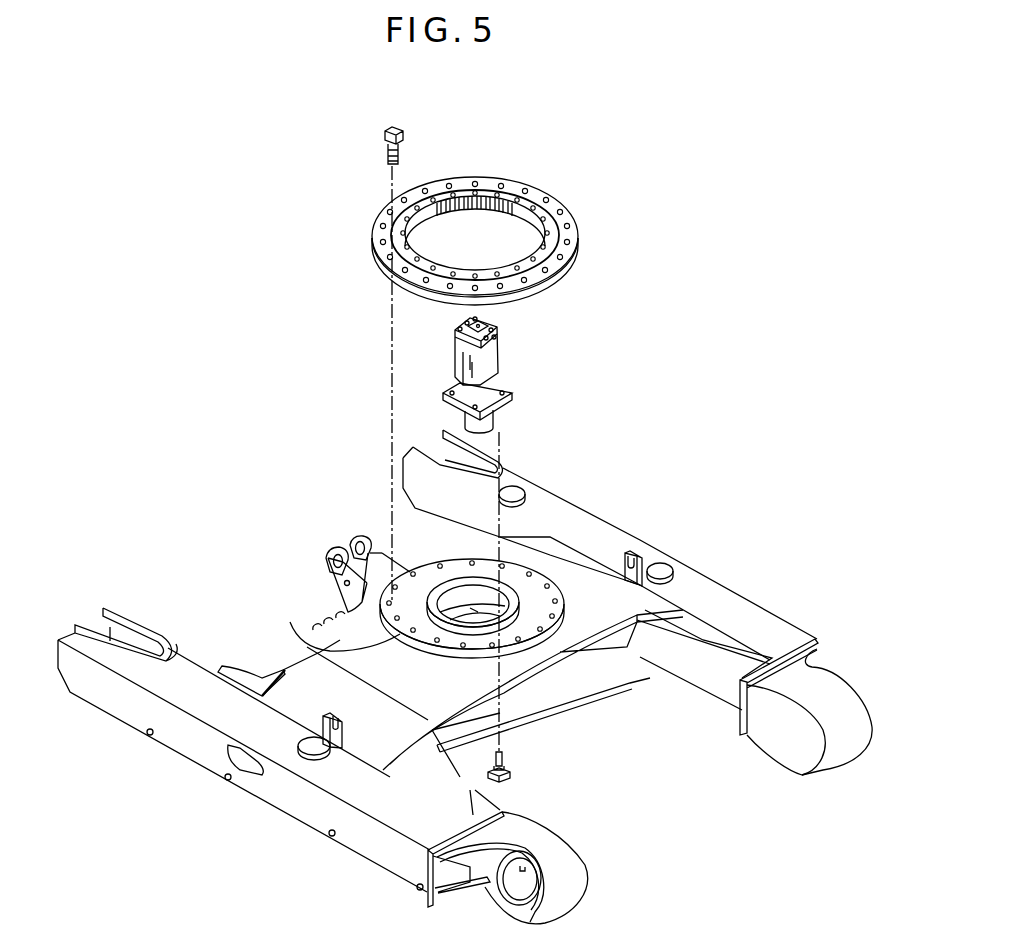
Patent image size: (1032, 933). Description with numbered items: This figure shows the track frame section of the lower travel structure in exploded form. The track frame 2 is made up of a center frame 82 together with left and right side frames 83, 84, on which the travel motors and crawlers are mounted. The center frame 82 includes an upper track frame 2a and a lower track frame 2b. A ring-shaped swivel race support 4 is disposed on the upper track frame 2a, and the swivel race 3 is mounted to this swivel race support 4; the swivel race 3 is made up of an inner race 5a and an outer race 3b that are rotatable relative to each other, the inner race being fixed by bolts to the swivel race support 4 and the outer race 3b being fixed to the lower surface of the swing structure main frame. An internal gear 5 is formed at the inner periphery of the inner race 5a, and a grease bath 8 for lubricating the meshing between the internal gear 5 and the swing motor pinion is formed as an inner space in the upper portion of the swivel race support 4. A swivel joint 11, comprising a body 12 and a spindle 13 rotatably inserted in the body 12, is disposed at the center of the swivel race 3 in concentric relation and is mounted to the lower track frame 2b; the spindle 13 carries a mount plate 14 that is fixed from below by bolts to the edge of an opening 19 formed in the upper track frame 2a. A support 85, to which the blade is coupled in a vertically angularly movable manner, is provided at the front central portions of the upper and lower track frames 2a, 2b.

The track frame 2 is at (465, 677).
The upper track frame 2a is at (577, 650).
The lower track frame 2b is at (575, 693).
The swivel race 3 is at (514, 217).
The outer race 3b is at (560, 272).
The swivel race support 4 is at (313, 640).
The internal gear 5 is at (478, 209).
The inner race 5a is at (552, 205).
The grease bath 8 is at (496, 562).
The swivel joint 11 is at (501, 382).
The body 12 is at (456, 355).
The spindle 13 is at (485, 420).
The mount plate 14 is at (512, 396).
The opening 19 is at (452, 610).
The center frame 82 is at (306, 562).
The left side frame 83 is at (388, 852).
The right side frame 84 is at (765, 607).
The support 85 is at (338, 547).